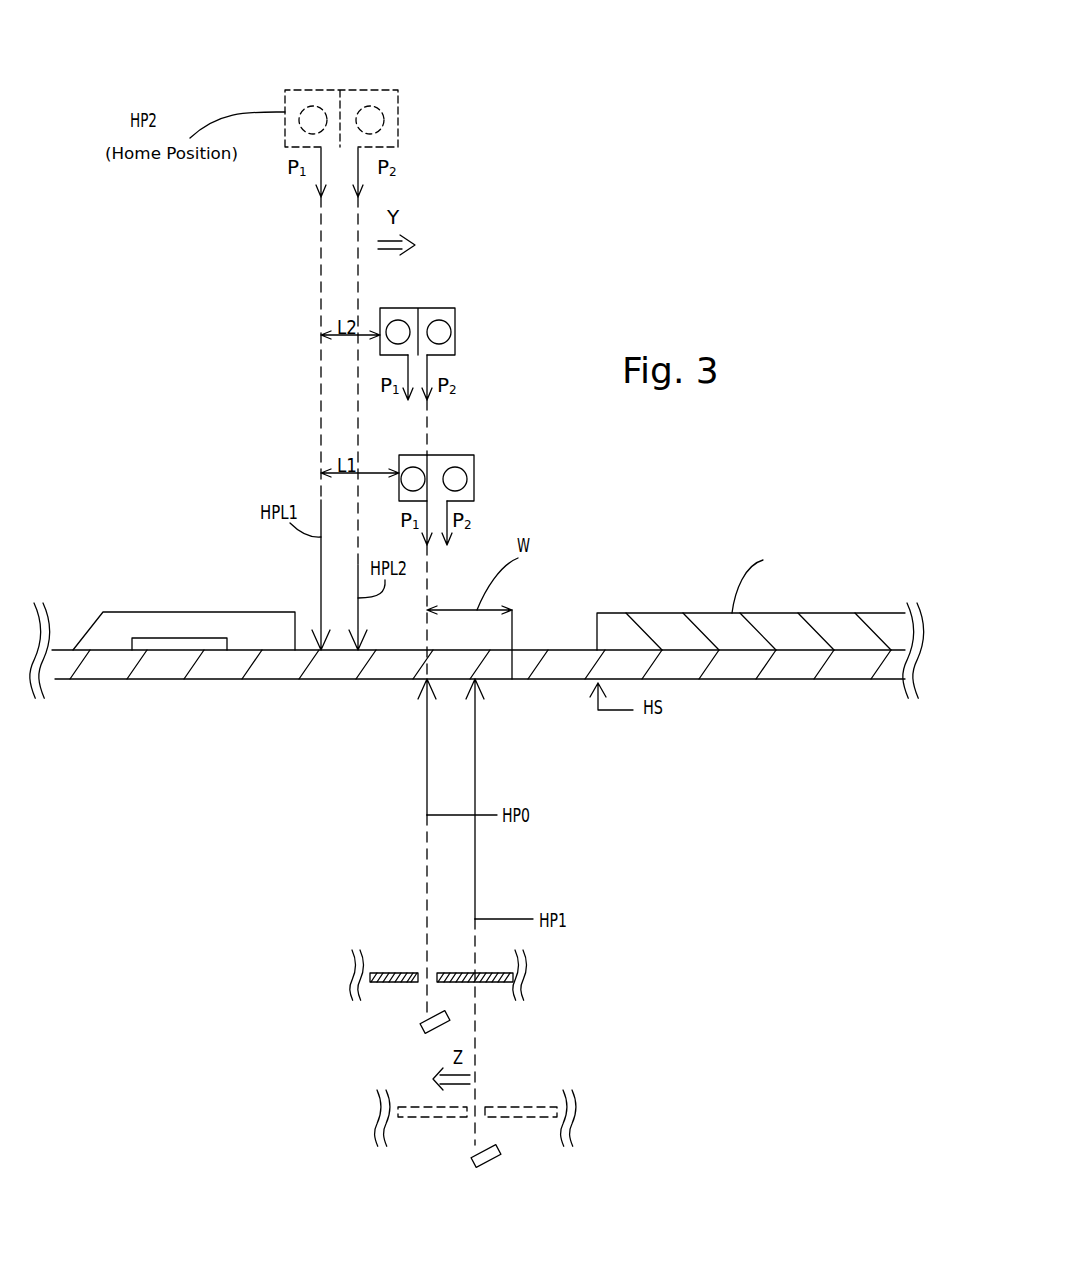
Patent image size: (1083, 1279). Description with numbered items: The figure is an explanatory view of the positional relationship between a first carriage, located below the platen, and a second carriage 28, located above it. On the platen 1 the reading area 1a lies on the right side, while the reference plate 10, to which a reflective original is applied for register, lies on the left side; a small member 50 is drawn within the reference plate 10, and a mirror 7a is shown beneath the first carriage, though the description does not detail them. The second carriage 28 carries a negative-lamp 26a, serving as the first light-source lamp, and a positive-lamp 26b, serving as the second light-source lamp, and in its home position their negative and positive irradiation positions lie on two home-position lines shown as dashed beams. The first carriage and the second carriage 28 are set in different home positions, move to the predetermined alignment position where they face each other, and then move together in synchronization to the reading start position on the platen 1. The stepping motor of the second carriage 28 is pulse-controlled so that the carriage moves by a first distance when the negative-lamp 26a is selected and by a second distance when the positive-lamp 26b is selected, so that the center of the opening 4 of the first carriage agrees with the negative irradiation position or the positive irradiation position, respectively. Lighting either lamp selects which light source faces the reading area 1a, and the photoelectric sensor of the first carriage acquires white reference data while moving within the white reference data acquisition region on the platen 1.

The platen 1 is at (70, 673).
The reading area 1a is at (663, 613).
The reference plate 10 is at (85, 632).
The reference member on carriage 50 is at (185, 645).
The second carriage 28 is at (337, 78).
The negative-lamp 26a is at (300, 107).
The positive-lamp 26b is at (382, 108).
The opening 4 is at (422, 973).
The mirror 7a is at (440, 1026).